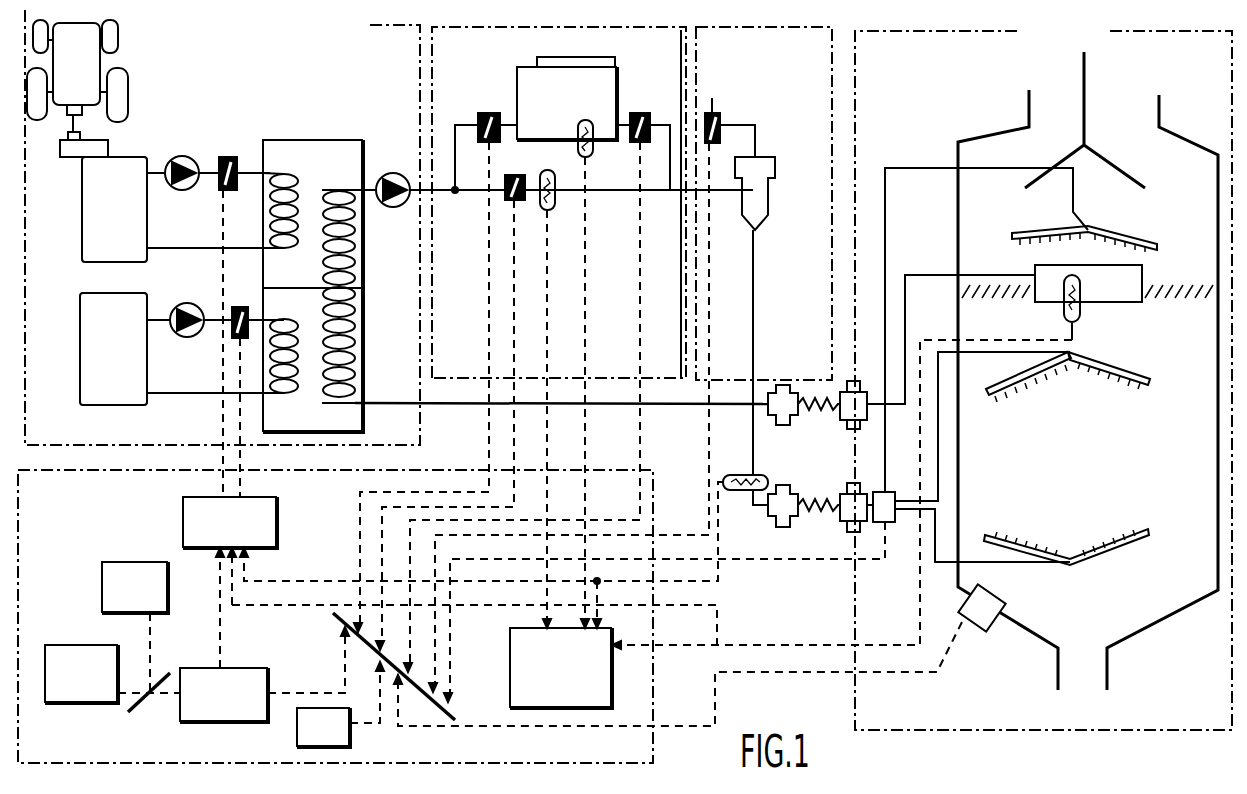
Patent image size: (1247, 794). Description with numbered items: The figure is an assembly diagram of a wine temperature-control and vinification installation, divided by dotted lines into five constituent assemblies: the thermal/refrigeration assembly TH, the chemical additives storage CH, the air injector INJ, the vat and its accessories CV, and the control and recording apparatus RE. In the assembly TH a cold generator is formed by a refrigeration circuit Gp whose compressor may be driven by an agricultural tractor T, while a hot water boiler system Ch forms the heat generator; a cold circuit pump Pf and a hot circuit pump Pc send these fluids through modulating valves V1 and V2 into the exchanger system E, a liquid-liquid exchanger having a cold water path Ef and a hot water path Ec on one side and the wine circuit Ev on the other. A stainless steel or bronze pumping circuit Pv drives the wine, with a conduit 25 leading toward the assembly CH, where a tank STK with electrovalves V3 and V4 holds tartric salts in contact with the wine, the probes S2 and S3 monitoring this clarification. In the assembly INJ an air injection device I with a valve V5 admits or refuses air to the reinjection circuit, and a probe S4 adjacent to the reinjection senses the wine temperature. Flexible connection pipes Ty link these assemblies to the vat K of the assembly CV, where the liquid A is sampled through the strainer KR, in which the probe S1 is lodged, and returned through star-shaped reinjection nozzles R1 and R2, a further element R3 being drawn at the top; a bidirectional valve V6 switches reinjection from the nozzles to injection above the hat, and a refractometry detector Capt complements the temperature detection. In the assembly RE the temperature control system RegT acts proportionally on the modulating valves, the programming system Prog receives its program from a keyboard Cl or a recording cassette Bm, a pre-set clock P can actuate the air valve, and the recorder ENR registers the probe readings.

The agricultural tractor T is at (77, 88).
The refrigeration circuit Gp is at (114, 209).
The cold circuit pump Pf is at (182, 151).
The modulating valve V1 is at (244, 305).
The hot water boiler system Ch is at (113, 349).
The hot circuit pump Pc is at (183, 301).
The modulating valve V2 is at (251, 382).
The exchanger system E is at (319, 269).
The cold water path Ef is at (280, 194).
The hot water path Ec is at (280, 339).
The wine circuit Ev is at (349, 276).
The wine pumping circuit Pv is at (393, 171).
The thermal/refrigeration assembly TH is at (222, 227).
The chemical additives storage assembly CH is at (559, 201).
The conduit 25 is at (664, 202).
The electrovalve V3 is at (505, 371).
The tank STK is at (567, 98).
The electrovalve V4 is at (450, 395).
The temperature probe S2 is at (541, 384).
The temperature probe S3 is at (599, 374).
The air injector assembly INJ is at (764, 203).
The air injection valve V5 is at (592, 384).
The air injection device I is at (761, 311).
The temperature probe S4 is at (504, 532).
The flexible connection pipes Ty is at (817, 456).
The sampled liquid A is at (951, 322).
The bidirectional valve V6 is at (766, 435).
The vat assembly CV is at (1043, 380).
The processing vat K is at (1088, 371).
The tray R3 is at (1084, 216).
The strainer KR is at (1087, 284).
The temperature probe S1 is at (860, 462).
The reinjection nozzle R2 is at (1068, 391).
The reinjection nozzle R1 is at (1066, 529).
The refractometry detector Capt is at (728, 646).
The control and recording apparatus RE is at (335, 615).
The temperature control system RegT is at (450, 571).
The keyboard Cl is at (135, 627).
The recording cassette Bm is at (112, 678).
The programming system Prog is at (264, 635).
The pre-set clock P is at (340, 704).
The recorder ENR is at (561, 668).